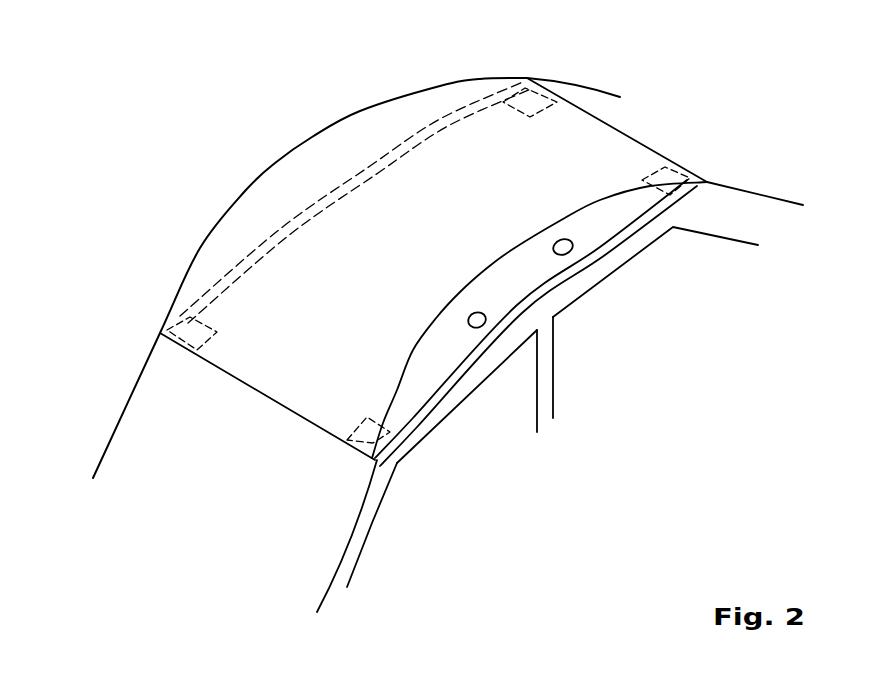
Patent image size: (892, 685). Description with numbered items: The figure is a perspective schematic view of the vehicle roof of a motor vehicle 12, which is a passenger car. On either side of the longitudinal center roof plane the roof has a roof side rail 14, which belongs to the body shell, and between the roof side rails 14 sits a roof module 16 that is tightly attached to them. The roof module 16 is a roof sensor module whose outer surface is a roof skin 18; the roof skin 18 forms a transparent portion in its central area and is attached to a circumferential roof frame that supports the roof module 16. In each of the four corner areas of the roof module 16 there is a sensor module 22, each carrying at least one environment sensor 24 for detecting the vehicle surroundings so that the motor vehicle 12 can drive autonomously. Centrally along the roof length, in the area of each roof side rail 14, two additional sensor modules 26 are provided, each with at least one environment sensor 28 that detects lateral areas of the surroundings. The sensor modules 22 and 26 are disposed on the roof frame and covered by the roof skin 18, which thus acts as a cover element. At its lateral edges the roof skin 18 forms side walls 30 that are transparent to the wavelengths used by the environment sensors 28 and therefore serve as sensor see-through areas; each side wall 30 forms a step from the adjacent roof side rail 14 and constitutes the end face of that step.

The motor vehicle 12 is at (762, 192).
The roof side rail 14 is at (200, 300).
The roof module 16 is at (593, 155).
The roof skin 18 is at (273, 167).
The sensor module 22 is at (430, 336).
The environment sensor 24 is at (530, 98).
The additional sensor module 26 is at (640, 372).
The environment sensor 28 is at (571, 253).
The side wall 30 is at (533, 277).